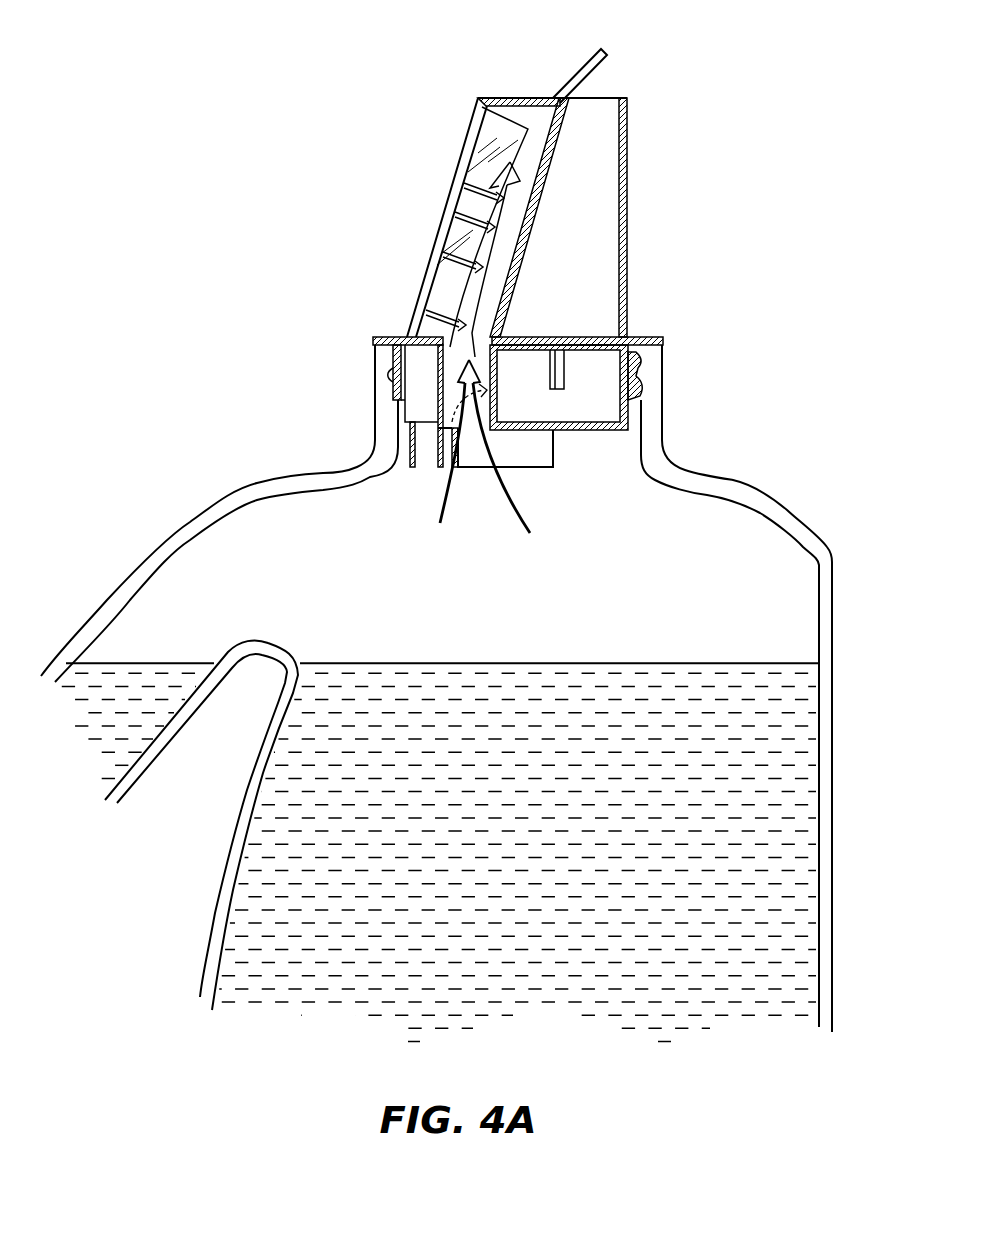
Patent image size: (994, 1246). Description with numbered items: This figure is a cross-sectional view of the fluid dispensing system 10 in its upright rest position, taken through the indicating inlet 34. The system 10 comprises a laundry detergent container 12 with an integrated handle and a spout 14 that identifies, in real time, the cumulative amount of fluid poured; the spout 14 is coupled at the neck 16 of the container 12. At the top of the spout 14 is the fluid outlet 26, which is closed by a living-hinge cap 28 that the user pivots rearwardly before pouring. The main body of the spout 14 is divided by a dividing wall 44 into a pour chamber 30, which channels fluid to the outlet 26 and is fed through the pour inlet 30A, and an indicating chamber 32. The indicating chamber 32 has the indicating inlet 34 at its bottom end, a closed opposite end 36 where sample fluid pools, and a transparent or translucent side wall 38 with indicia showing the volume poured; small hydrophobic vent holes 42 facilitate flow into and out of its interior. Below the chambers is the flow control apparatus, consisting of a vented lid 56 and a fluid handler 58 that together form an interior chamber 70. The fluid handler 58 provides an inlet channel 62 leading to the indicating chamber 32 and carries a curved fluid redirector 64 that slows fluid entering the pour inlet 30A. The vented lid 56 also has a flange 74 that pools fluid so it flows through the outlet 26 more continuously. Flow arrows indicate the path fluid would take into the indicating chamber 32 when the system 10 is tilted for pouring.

The fluid dispensing system 10 is at (245, 155).
The laundry detergent container 12 is at (822, 537).
The spout 14 is at (666, 169).
The neck 16 is at (652, 402).
The fluid outlet 26 is at (612, 79).
The cap 28 is at (586, 66).
The pour chamber 30 is at (597, 209).
The pour inlet 30A is at (598, 331).
The indicating chamber 32 is at (527, 113).
The indicating inlet 34 is at (443, 328).
The closed opposite end 36 is at (506, 96).
The side wall 38 is at (446, 215).
The vent holes 42 is at (427, 480).
The dividing wall 44 is at (565, 127).
The vented lid 56 is at (598, 432).
The fluid handler 58 is at (645, 345).
The inlet channel 62 is at (452, 382).
The fluid redirector 64 is at (548, 388).
The interior chamber 70 is at (607, 372).
The flange 74 is at (513, 463).